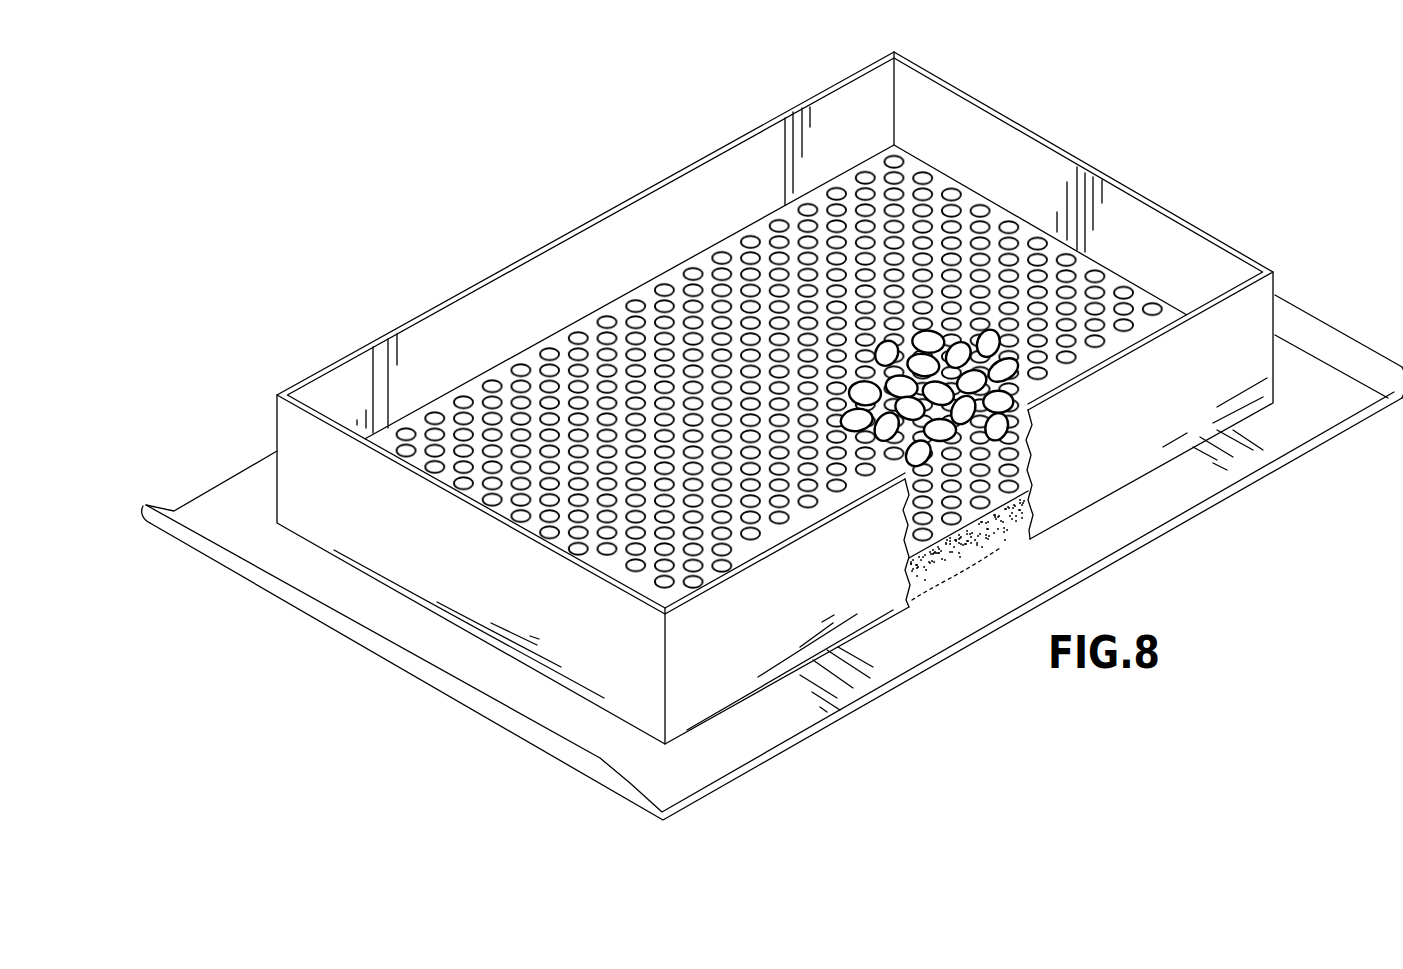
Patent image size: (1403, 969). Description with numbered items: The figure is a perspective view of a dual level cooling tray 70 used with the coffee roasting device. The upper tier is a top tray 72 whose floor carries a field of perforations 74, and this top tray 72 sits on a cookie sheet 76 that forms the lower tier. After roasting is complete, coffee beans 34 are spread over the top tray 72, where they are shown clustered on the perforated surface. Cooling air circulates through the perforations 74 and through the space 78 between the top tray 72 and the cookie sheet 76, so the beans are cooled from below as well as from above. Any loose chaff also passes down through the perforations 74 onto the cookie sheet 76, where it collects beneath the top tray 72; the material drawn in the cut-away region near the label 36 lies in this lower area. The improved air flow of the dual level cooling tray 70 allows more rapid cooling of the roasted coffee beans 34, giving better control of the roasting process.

The dual level cooling tray 70 is at (1030, 82).
The top tray 72 is at (561, 341).
The perforations 74 is at (491, 382).
The coffee beans 34 is at (890, 348).
The cookie sheet 76 is at (1331, 345).
The space 78 is at (985, 533).
The fines 36 is at (939, 582).